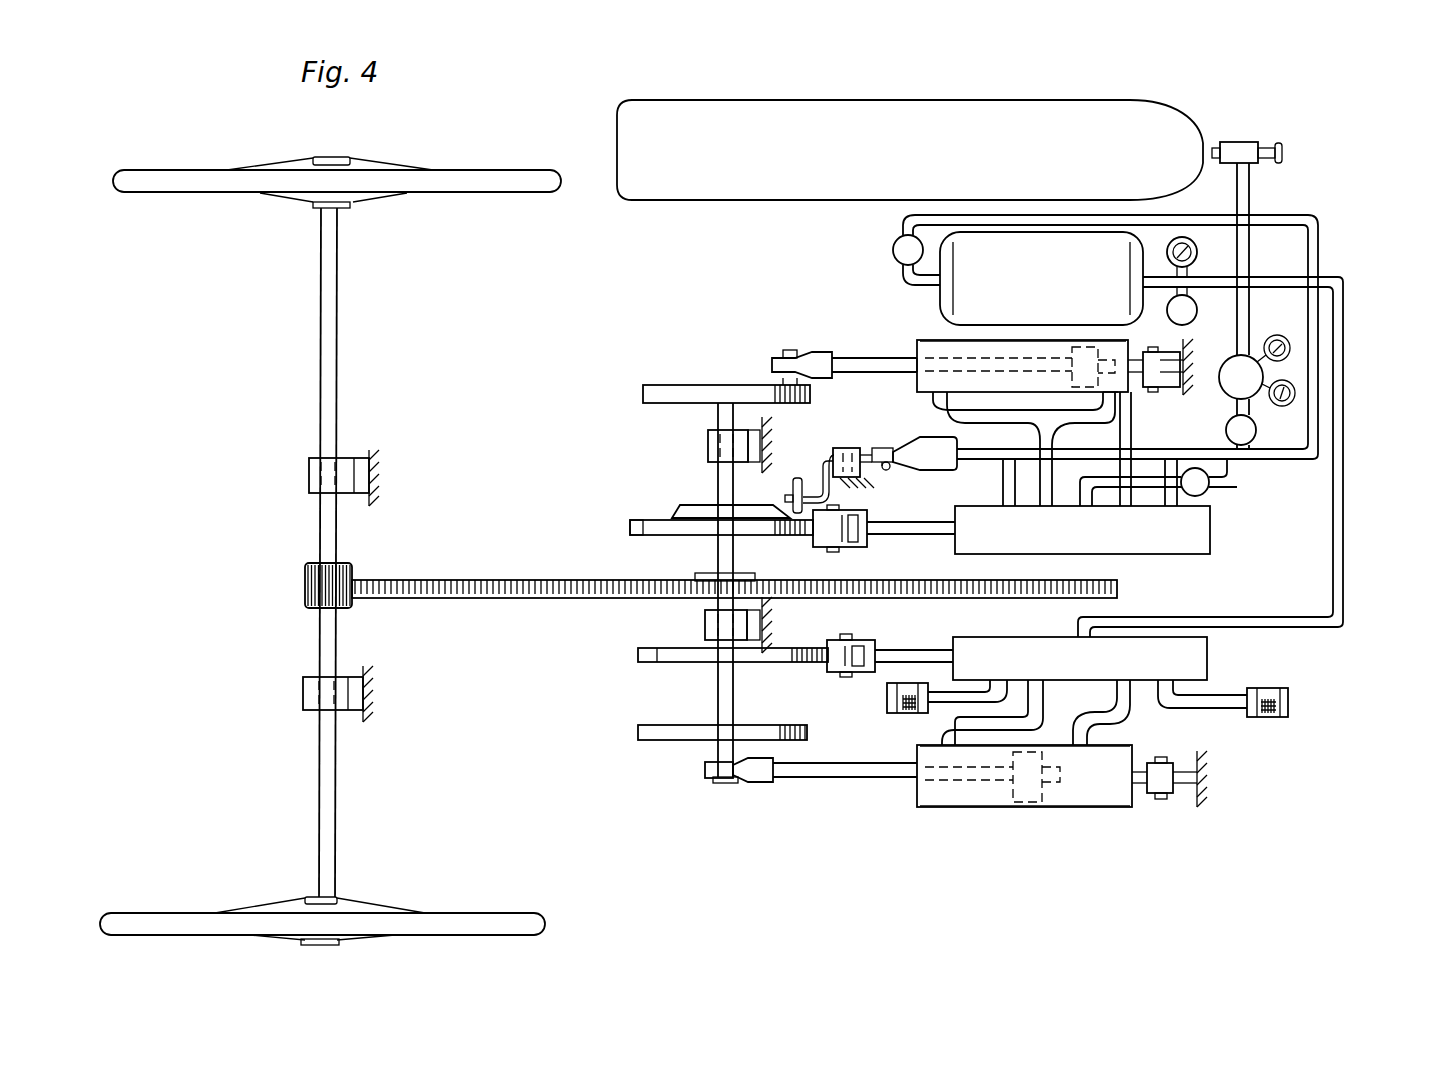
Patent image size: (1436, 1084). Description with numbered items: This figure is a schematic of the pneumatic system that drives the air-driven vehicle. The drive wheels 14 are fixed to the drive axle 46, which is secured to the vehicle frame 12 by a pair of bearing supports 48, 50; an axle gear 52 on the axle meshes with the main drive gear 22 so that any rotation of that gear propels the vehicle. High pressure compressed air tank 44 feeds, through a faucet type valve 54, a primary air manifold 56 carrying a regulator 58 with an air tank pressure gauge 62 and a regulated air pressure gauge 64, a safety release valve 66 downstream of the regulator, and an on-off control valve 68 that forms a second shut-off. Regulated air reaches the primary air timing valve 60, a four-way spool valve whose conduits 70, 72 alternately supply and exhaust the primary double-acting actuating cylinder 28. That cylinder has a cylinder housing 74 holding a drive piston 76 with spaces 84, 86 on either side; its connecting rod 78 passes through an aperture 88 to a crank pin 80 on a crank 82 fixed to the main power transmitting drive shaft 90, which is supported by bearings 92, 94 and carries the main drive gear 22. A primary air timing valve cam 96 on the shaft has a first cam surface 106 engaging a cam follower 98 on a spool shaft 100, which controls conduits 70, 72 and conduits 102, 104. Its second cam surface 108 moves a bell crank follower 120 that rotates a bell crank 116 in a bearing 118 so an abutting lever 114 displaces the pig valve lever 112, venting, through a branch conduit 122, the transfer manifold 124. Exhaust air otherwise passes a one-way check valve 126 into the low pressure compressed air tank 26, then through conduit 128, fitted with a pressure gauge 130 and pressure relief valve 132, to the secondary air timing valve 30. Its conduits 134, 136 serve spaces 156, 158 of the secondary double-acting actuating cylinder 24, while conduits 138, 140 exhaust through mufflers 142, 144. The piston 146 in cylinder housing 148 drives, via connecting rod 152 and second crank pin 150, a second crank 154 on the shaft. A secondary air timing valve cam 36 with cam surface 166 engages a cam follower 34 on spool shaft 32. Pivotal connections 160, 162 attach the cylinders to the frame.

The vehicle frame 12 is at (379, 473).
The drive wheels 14 is at (465, 186).
The main drive gear 22 is at (495, 598).
The secondary double-acting actuating cylinder 24 is at (912, 798).
The low pressure compressed air tank 26 is at (1053, 291).
The primary double-acting actuating cylinder 28 is at (915, 345).
The secondary air timing valve 30 is at (1188, 663).
The spool shaft 32 is at (927, 656).
The cam follower 34 is at (830, 660).
The secondary air timing valve cam 36 is at (677, 663).
The high pressure compressed air tank 44 is at (827, 133).
The drive axle 46 is at (320, 328).
The bearing support 48 is at (309, 475).
The bearing support 50 is at (301, 696).
The axle gear 52 is at (313, 582).
The faucet type valve 54 is at (1238, 147).
The primary air manifold 56 is at (1243, 190).
The regulator 58 is at (1222, 364).
The primary air timing valve 60 is at (1193, 542).
The air tank pressure gauge 62 is at (1292, 343).
The regulated air pressure gauge 64 is at (1296, 392).
The safety release valve 66 is at (1247, 440).
The on-off control valve 68 is at (1208, 494).
The conduit 70 is at (1048, 493).
The conduit 72 is at (1130, 497).
The cylinder housing 74 is at (940, 345).
The drive piston 76 is at (1078, 347).
The connecting rod 78 is at (843, 360).
The crank pin 80 is at (780, 350).
The crank 82 is at (643, 393).
The space 84 is at (1127, 407).
The space 86 is at (930, 392).
The aperture 88 is at (916, 372).
The main power transmitting drive shaft 90 is at (718, 482).
The bearing 92 is at (708, 442).
The bearing 94 is at (705, 625).
The primary air timing valve cam 96 is at (668, 535).
The cam follower 98 is at (845, 545).
The spool shaft 100 is at (905, 535).
The conduit 102 is at (1180, 513).
The conduit 104 is at (1015, 493).
The first cam surface 106 is at (630, 527).
The second cam surface 108 is at (675, 510).
The lever 112 is at (882, 459).
The abutting lever 114 is at (895, 470).
The bell crank 116 is at (820, 477).
The bearing 118 is at (833, 450).
The bell crank follower 120 is at (782, 513).
The branch conduit 122 is at (981, 461).
The transfer manifold 124 is at (1318, 242).
The one-way check valve 126 is at (895, 258).
The conduit 128 is at (1342, 517).
The pressure gauge 130 is at (1197, 252).
The pressure relief valve 132 is at (1197, 310).
The conduit 134 is at (1127, 702).
The conduit 136 is at (965, 747).
The conduit 138 is at (1230, 707).
The conduit 140 is at (940, 707).
The muffler 142 is at (1283, 712).
The muffler 144 is at (887, 700).
The piston 146 is at (1037, 802).
The cylinder housing 148 is at (988, 797).
The second crank pin 150 is at (723, 785).
The connecting rod 152 is at (803, 777).
The second crank 154 is at (652, 732).
The space 156 is at (1095, 790).
The space 158 is at (928, 800).
The pivotal connection 160 is at (1150, 388).
The pivotal connection 162 is at (1160, 799).
The cam surface 166 is at (638, 652).